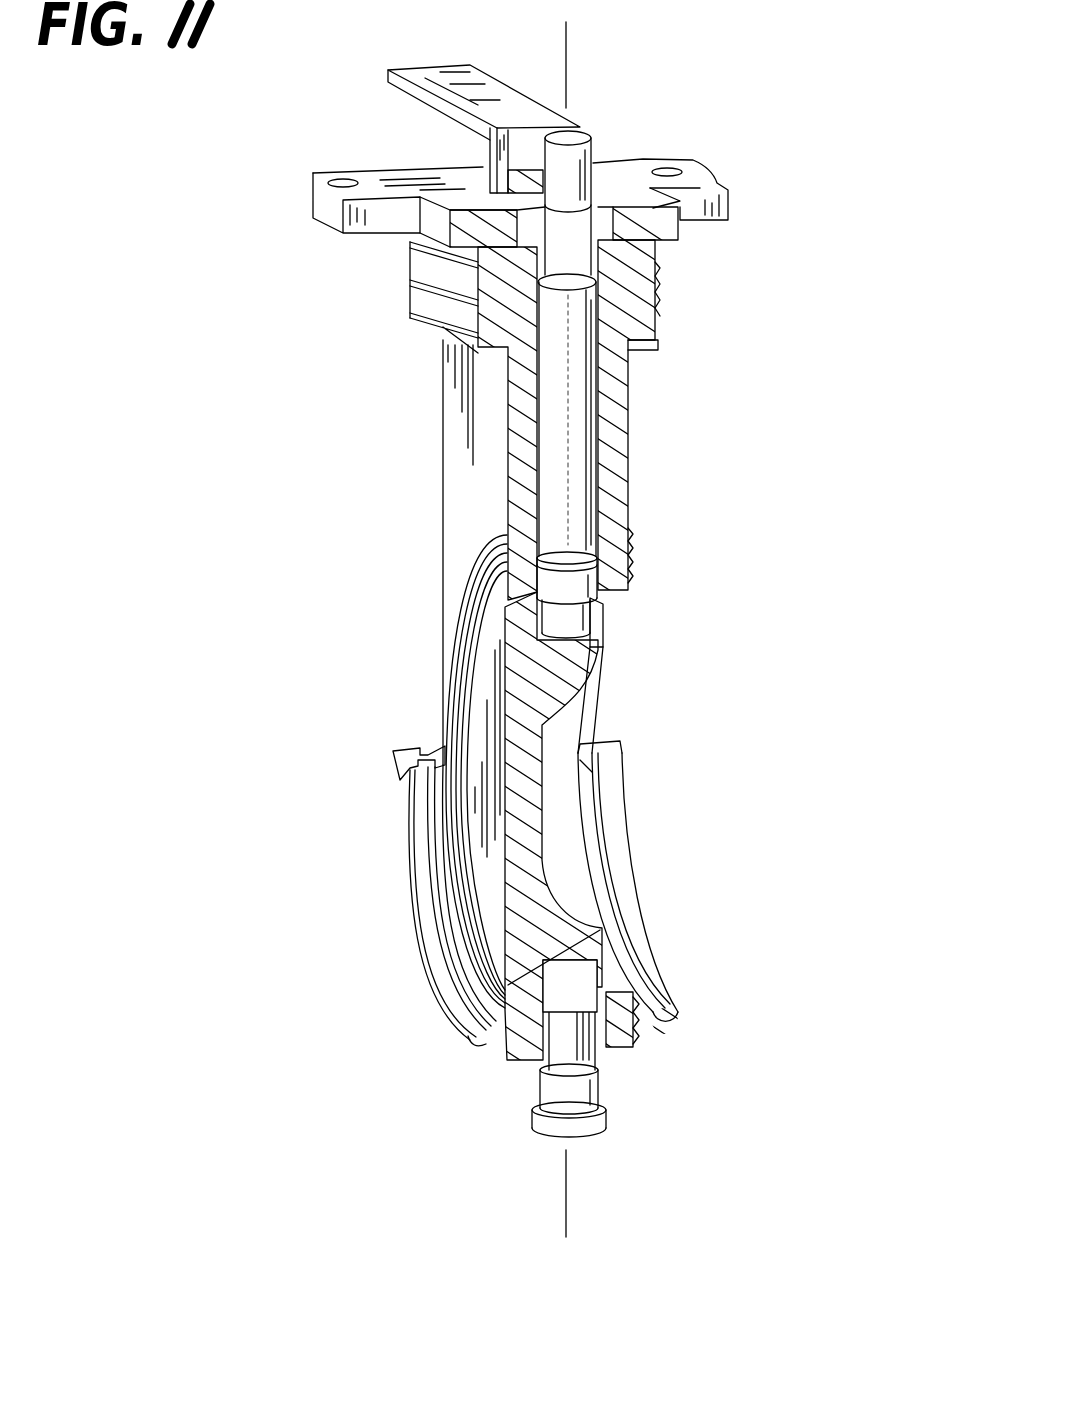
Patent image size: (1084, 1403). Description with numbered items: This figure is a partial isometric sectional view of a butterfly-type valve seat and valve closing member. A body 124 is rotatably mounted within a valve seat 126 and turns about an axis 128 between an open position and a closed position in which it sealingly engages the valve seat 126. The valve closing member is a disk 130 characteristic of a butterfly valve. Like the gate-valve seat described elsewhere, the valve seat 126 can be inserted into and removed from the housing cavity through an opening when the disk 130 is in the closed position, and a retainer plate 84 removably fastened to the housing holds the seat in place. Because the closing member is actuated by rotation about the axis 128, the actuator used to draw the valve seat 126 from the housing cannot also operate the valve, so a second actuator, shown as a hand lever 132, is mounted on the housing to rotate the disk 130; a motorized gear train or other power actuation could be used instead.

The retainer plate 84 is at (728, 205).
The body 124 is at (485, 681).
The valve seat 126 is at (610, 467).
The axis 128 is at (567, 48).
The disk 130 is at (540, 790).
The hand lever 132 is at (397, 84).